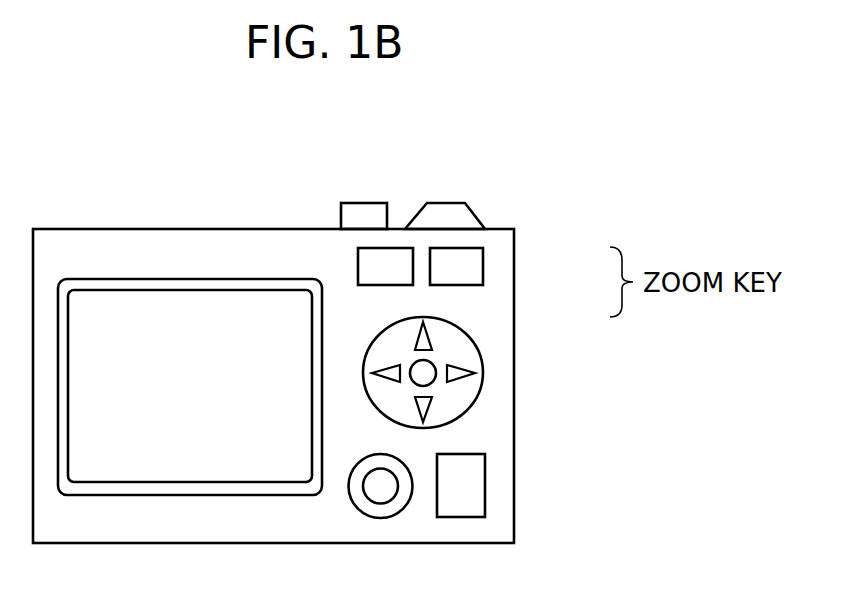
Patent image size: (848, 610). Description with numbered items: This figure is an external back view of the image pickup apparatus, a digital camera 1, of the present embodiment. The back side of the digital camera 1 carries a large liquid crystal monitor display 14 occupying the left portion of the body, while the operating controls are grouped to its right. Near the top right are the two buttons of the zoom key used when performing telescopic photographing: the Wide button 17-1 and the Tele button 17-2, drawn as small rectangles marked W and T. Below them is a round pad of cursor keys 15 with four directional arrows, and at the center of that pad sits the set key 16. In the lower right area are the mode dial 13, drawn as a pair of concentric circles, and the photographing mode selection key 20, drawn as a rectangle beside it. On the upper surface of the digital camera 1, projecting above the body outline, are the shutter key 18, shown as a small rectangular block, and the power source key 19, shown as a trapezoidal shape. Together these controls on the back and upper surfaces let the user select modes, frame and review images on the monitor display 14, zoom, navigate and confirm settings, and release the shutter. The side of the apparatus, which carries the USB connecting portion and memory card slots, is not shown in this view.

The digital camera 1 is at (258, 181).
The mode dial 13 is at (380, 518).
The liquid crystal monitor display 14 is at (187, 465).
The cursor keys 15 is at (481, 357).
The set key 16 is at (430, 390).
The Wide button 17-1 is at (400, 285).
The Tele button 17-2 is at (483, 268).
The shutter key 18 is at (370, 203).
The power source key 19 is at (455, 203).
The photographing mode selection key 20 is at (485, 485).